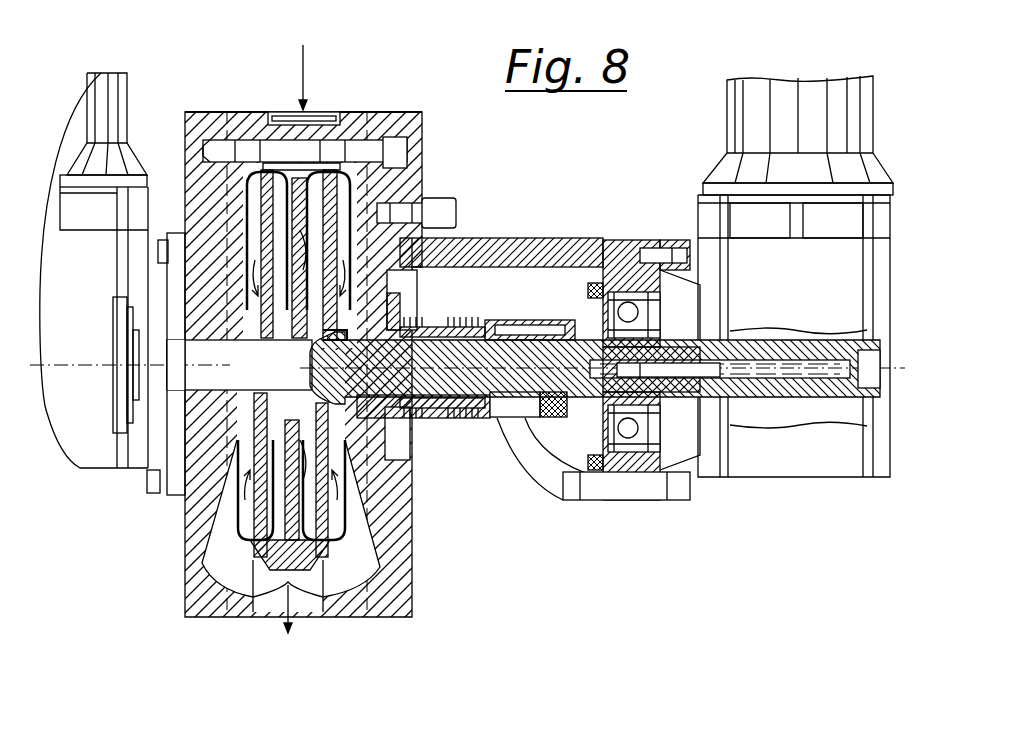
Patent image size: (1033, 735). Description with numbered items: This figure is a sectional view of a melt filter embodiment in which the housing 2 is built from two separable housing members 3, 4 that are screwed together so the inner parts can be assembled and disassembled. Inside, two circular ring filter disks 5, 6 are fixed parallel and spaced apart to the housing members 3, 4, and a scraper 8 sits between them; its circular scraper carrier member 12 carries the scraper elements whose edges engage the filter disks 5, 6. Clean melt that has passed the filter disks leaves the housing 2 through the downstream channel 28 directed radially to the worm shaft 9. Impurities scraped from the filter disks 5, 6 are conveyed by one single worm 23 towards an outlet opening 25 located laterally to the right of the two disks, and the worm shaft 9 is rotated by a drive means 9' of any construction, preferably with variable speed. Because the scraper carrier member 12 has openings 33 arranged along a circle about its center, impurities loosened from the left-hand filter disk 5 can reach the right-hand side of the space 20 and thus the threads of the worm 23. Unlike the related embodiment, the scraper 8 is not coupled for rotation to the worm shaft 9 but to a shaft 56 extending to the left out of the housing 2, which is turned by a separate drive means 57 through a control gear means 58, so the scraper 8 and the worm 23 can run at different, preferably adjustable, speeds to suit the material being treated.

The housing 2 is at (211, 110).
The housing member 3 is at (241, 122).
The housing member 4 is at (393, 110).
The filter disk 5 is at (262, 197).
The filter disk 6 is at (400, 215).
The scraper 8 is at (372, 197).
The worm shaft 9 is at (602, 337).
The drive means 9' is at (778, 276).
The scraper carrier member 12 is at (311, 122).
The space 20 is at (312, 455).
The worm 23 is at (443, 390).
The outlet opening 25 is at (525, 408).
The downstream channel 28 is at (270, 597).
The openings 33 is at (258, 262).
The shaft 56 is at (222, 372).
The drive means 57 is at (108, 112).
The control gear means 58 is at (94, 270).